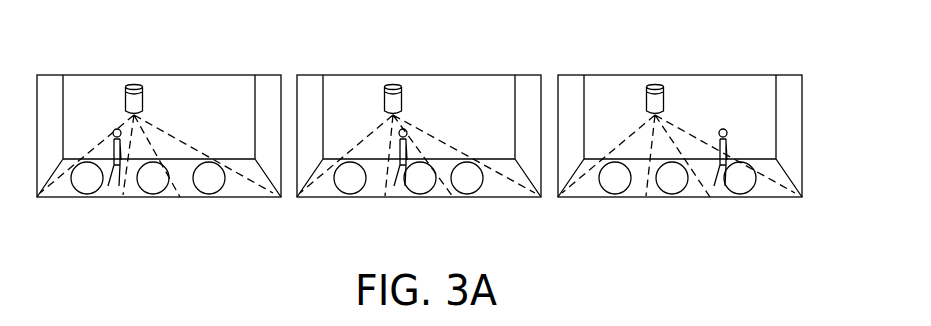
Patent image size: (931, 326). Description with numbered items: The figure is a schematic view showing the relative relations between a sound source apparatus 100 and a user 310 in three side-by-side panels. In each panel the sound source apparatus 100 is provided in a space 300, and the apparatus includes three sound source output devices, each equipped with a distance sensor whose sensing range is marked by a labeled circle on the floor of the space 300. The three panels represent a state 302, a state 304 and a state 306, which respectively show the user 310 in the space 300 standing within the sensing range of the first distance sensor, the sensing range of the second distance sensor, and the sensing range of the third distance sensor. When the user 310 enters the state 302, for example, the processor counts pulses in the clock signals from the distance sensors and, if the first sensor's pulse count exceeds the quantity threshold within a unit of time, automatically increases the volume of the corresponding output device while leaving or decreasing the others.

The space 300 is at (215, 74).
The sound source apparatus 100 is at (145, 100).
The user 310 is at (112, 132).
The state 302 is at (283, 241).
The state 304 is at (543, 241).
The state 306 is at (804, 241).